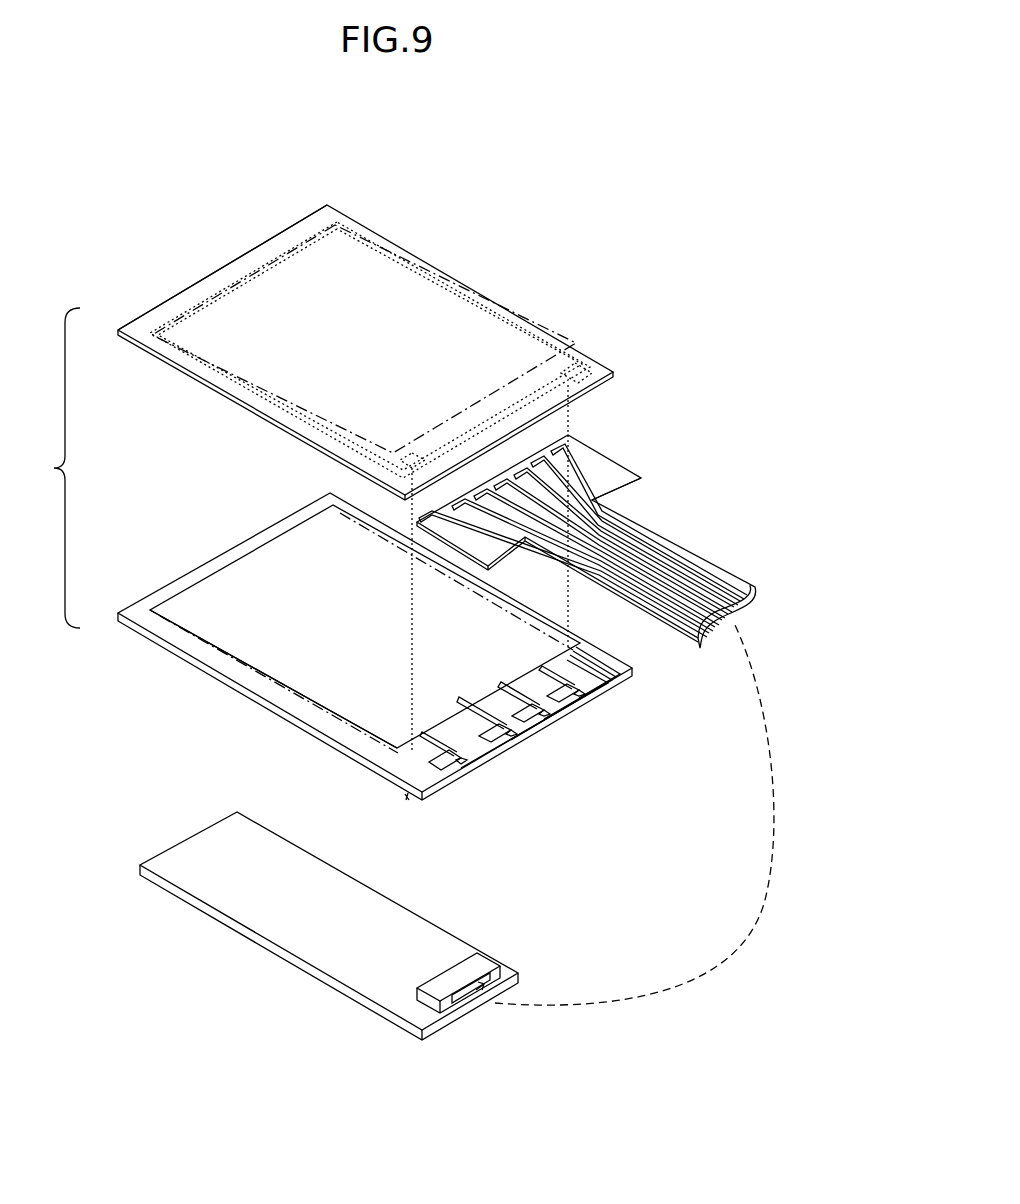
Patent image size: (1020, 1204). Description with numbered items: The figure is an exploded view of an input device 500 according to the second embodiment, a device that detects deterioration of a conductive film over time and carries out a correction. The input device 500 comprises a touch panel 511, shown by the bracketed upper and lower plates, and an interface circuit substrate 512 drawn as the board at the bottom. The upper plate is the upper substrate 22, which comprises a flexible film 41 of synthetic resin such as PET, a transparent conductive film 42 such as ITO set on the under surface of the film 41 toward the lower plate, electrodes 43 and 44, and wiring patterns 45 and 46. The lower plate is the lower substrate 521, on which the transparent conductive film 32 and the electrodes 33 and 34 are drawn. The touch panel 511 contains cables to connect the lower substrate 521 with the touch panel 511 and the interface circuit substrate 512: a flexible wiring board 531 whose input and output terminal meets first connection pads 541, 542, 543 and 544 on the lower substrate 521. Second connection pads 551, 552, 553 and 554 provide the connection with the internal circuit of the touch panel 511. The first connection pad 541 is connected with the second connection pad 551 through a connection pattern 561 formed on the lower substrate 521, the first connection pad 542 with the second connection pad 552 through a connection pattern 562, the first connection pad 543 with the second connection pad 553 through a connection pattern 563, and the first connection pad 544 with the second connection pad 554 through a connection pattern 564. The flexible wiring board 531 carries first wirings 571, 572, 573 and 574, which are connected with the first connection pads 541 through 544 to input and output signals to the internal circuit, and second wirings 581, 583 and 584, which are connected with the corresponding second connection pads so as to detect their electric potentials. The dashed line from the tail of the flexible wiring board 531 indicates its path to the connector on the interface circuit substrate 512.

The input device 500 is at (106, 164).
The touch panel 511 is at (42, 468).
The upper substrate 22 is at (493, 262).
The film 41 is at (190, 300).
The conductive film 42 is at (498, 347).
The electrode 43 is at (383, 249).
The electrode 44 is at (240, 395).
The wiring pattern 45 is at (585, 372).
The wiring pattern 46 is at (397, 460).
The flexible wiring board 531 is at (648, 464).
The first wiring 571 is at (425, 513).
The first wiring 572 is at (495, 487).
The first wiring 573 is at (515, 475).
The first wiring 574 is at (560, 448).
The second wiring 581 is at (450, 508).
The second wiring 583 is at (537, 464).
The second wiring 584 is at (590, 495).
The electrode 34 is at (152, 612).
The conductive film 32 is at (275, 657).
The electrode 33 is at (395, 747).
The lower substrate 521 is at (408, 796).
The first connection pad 541 is at (448, 782).
The first connection pad 542 is at (490, 750).
The first connection pad 543 is at (522, 728).
The first connection pad 544 is at (560, 706).
The second connection pad 551 is at (483, 766).
The second connection pad 552 is at (520, 740).
The second connection pad 553 is at (545, 717).
The second connection pad 554 is at (595, 685).
The connection pattern 561 is at (452, 772).
The connection pattern 562 is at (480, 732).
The connection pattern 563 is at (482, 702).
The connection pattern 564 is at (538, 690).
The interface circuit substrate 512 is at (290, 962).